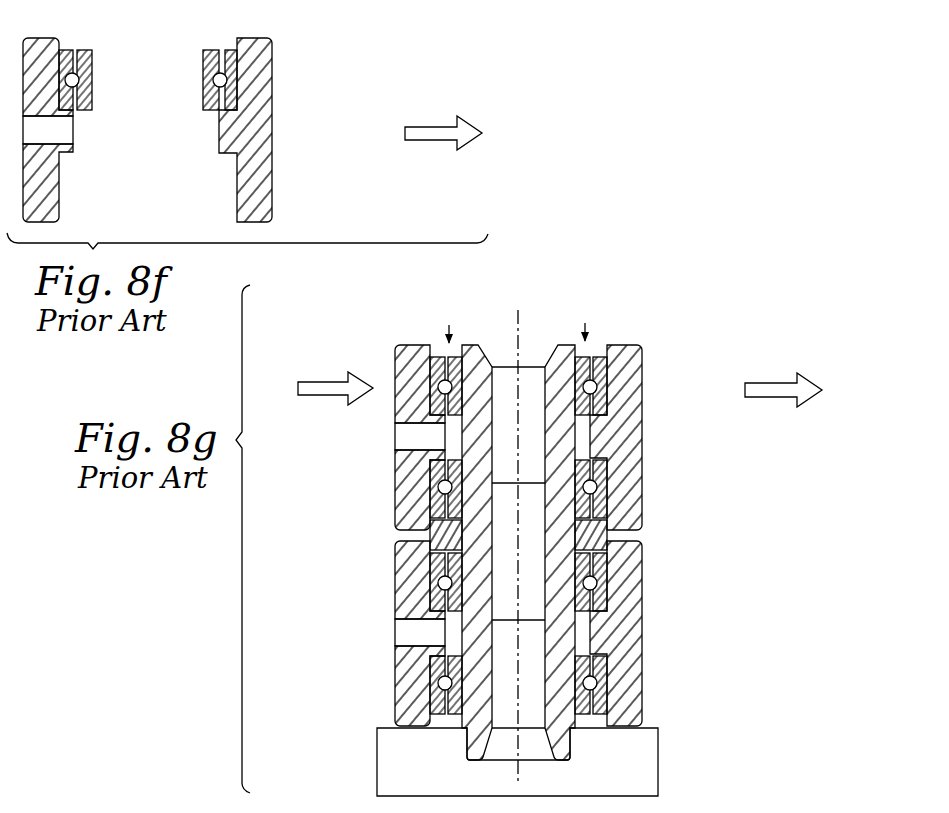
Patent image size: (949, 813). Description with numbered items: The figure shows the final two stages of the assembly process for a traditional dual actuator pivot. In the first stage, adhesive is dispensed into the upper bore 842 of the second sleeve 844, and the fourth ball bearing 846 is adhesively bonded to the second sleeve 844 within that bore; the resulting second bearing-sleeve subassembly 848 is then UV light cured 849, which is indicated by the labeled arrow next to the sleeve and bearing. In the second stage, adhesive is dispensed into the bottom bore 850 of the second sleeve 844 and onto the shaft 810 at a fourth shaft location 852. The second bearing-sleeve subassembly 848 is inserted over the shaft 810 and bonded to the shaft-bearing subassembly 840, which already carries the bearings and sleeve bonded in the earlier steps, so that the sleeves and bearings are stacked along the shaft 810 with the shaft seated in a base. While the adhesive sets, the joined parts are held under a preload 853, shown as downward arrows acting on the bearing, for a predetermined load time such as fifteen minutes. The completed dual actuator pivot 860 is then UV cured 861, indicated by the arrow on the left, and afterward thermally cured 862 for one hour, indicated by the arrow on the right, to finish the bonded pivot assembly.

In FIG. 8G, the shaft 810 is at (570, 745).
In FIG. 8G, the shaft-bearing subassembly 840 is at (662, 591).
In FIG. 8F, the upper bore 842 is at (233, 50).
In FIG. 8F, the second sleeve 844 is at (274, 160).
In FIG. 8G, the second sleeve 844 is at (647, 402).
In FIG. 8F, the fourth ball bearing 846 is at (203, 58).
In FIG. 8F, the second bearing-sleeve subassembly 848 is at (265, 122).
In FIG. 8G, the second bearing-sleeve subassembly 848 is at (645, 408).
In FIG. 8F, the UV light cure 849 is at (390, 78).
In FIG. 8G, the bottom bore 850 is at (598, 473).
In FIG. 8G, the fourth shaft location 852 is at (595, 348).
In FIG. 8G, the preload 853 is at (500, 272).
In FIG. 8G, the completed dual actuator pivot 860 is at (388, 329).
In FIG. 8G, the UV cure 861 is at (302, 338).
In FIG. 8G, the thermal cure 862 is at (760, 338).